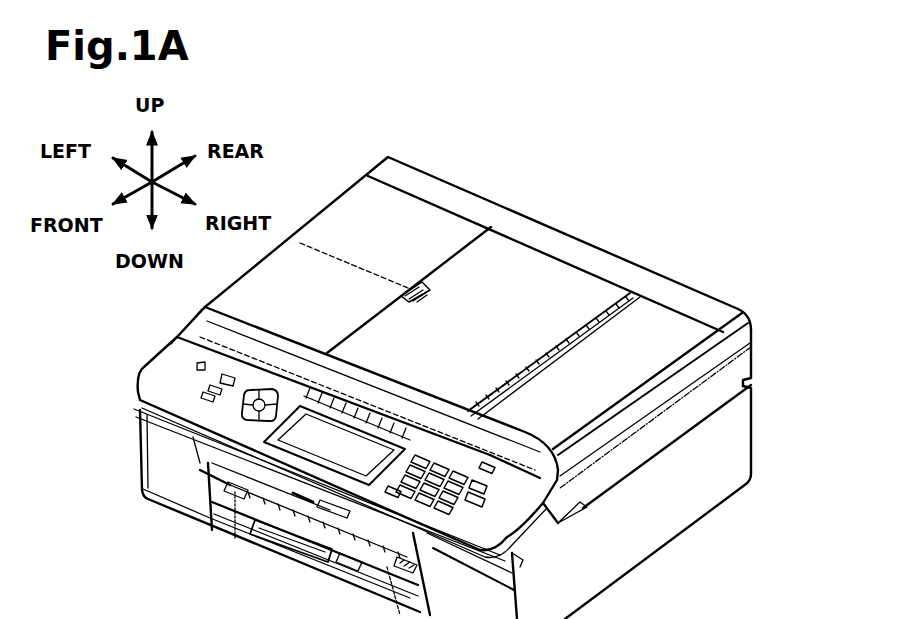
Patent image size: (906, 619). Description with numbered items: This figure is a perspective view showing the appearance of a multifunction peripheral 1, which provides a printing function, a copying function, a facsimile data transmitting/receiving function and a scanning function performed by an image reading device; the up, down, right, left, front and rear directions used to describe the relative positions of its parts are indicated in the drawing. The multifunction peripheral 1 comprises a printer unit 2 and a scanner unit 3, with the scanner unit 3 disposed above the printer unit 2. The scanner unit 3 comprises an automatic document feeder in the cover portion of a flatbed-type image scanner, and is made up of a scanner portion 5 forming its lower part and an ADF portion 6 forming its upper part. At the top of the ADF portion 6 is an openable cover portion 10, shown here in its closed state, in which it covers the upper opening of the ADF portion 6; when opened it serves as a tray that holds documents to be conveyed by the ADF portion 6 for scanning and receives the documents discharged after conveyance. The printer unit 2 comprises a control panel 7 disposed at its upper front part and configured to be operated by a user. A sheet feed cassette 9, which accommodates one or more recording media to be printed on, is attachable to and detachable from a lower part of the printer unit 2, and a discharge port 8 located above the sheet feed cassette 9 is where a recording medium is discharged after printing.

The multifunction peripheral 1 is at (682, 206).
The printer unit 2 is at (795, 385).
The scanner unit 3 is at (786, 312).
The scanner portion 5 is at (760, 347).
The ADF portion 6 is at (760, 312).
The control panel 7 is at (157, 367).
The discharge port 8 is at (267, 513).
The sheet feed cassette 9 is at (310, 567).
The cover portion 10 is at (541, 258).